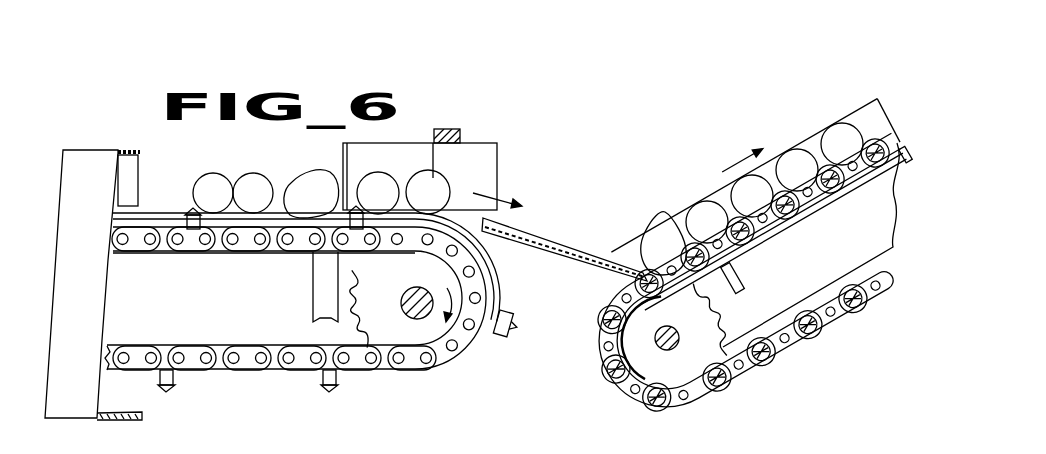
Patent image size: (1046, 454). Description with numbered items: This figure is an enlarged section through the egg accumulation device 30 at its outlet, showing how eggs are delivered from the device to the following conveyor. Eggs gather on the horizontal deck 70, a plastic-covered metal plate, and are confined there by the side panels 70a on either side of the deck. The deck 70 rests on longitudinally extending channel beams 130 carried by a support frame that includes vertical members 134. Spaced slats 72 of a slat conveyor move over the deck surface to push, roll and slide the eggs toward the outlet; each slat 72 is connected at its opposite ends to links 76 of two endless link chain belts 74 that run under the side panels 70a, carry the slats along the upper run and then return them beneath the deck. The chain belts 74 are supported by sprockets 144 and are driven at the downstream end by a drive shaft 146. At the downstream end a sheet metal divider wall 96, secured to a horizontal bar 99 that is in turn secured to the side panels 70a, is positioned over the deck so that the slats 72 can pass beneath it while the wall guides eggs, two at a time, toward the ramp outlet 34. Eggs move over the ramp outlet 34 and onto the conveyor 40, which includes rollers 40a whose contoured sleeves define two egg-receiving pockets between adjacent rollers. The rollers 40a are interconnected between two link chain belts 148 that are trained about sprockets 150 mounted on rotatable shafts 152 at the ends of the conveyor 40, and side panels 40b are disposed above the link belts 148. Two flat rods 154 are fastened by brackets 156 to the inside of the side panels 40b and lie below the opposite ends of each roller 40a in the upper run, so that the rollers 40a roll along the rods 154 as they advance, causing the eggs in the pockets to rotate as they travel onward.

The accumulation device 30 is at (116, 143).
The side panels 70a is at (73, 150).
The horizontal deck 70 is at (132, 214).
The slats 72 is at (189, 213).
The links 76 is at (194, 230).
The endless link chain belts 74 is at (133, 252).
The channel beams 130 is at (260, 250).
The vertical members 134 is at (313, 298).
The sprockets 144 is at (428, 333).
The drive shaft 146 is at (416, 288).
The divider wall 96 is at (346, 151).
The horizontal bar 99 is at (457, 135).
The ramp outlet 34 is at (523, 237).
The conveyor 40 is at (834, 106).
The side panels 40b is at (818, 138).
The rollers 40a is at (636, 283).
The link chain belts 148 is at (833, 318).
The sprockets 150 is at (693, 321).
The rotatable shafts 152 is at (678, 344).
The flat rods 154 is at (870, 172).
The brackets 156 is at (741, 270).